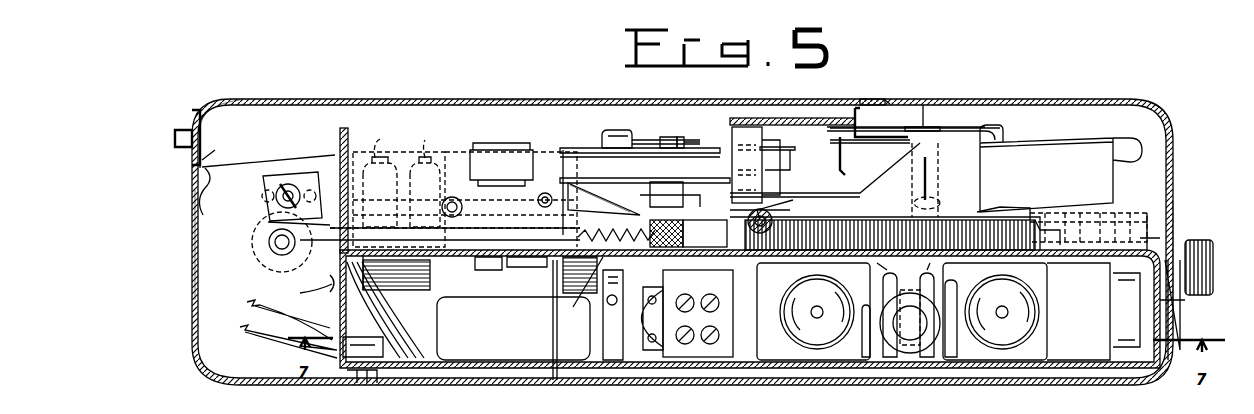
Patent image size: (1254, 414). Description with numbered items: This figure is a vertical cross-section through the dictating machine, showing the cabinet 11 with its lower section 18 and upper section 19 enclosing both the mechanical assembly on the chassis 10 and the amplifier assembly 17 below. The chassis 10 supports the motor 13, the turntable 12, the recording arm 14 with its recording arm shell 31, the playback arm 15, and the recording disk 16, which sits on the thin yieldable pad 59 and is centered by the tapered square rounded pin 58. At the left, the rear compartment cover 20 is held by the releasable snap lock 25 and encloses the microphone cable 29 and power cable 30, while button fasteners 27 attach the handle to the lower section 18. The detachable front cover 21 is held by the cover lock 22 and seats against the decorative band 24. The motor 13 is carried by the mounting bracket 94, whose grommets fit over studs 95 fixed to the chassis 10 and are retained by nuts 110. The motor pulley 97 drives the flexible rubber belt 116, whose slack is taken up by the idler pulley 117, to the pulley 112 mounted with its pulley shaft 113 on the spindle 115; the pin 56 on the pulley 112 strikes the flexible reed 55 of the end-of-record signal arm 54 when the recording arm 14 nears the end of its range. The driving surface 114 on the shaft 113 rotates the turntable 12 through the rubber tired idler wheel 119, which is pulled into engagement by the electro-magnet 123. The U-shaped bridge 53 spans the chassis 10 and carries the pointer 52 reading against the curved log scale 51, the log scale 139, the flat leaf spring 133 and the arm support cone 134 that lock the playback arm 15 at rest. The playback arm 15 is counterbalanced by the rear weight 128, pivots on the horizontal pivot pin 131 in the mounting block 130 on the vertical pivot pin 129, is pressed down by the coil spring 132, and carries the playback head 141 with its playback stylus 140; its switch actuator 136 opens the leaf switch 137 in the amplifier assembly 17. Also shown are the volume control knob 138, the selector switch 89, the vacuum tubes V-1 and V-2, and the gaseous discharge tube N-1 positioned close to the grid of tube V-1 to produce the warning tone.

The chassis 10 is at (1178, 238).
The cabinet 11 is at (183, 334).
The turntable 12 is at (950, 232).
The motor 13 is at (330, 285).
The recording arm 14 is at (1008, 125).
The playback arm 15 is at (1100, 136).
The recording disk 16 is at (1038, 220).
The amplifier assembly 17 is at (972, 377).
The lower section 18 is at (193, 304).
The upper section 19 is at (488, 99).
The rear compartment cover 20 is at (247, 99).
The front cover 21 is at (988, 126).
The cover lock 22 is at (1190, 290).
The decorative band 24 is at (877, 99).
The snap lock 25 is at (185, 178).
The button fasteners 27 is at (255, 256).
The microphone cable 29 is at (250, 302).
The power cable 30 is at (248, 327).
The recording arm shell 31 is at (1003, 132).
The curved log scale 51 is at (925, 126).
The pointer 52 is at (856, 108).
The U-shaped bridge 53 is at (780, 118).
The end-of-record signal arm 54 is at (615, 130).
The flexible reed 55 is at (650, 140).
The pin 56 is at (684, 140).
The tapered square rounded pin 58 is at (930, 200).
The yieldable pad 59 is at (886, 214).
The selector switch 89 is at (393, 356).
The mounting bracket 94 is at (405, 214).
The studs 95 is at (385, 138).
The motor pulley 97 is at (545, 150).
The nut 110 is at (425, 158).
The pulley 112 is at (740, 127).
The pulley shaft 113 is at (690, 185).
The driving surface 114 is at (700, 270).
The spindle 115 is at (668, 137).
The flexible rubber belt 116 is at (565, 150).
The idler pulley 117 is at (508, 143).
The rubber tired idler wheel 119 is at (688, 233).
The electro-magnet 123 is at (344, 128).
The rear weight 128 is at (462, 256).
The vertical pivot pin 129 is at (500, 297).
The mounting block 130 is at (492, 270).
The horizontal pivot pin 131 is at (545, 267).
The coil spring 132 is at (580, 307).
The flat leaf spring 133 is at (782, 180).
The arm support cone 134 is at (796, 200).
The switch actuator 136 is at (650, 272).
The leaf switch 137 is at (608, 340).
The volume control knob 138 is at (1160, 218).
The log scale 139 is at (890, 145).
The playback stylus 140 is at (998, 207).
The playback head 141 is at (1035, 218).
The vacuum tube V-1 is at (1000, 345).
The vacuum tube V-2 is at (820, 345).
The gaseous discharge tube N-1 is at (908, 290).